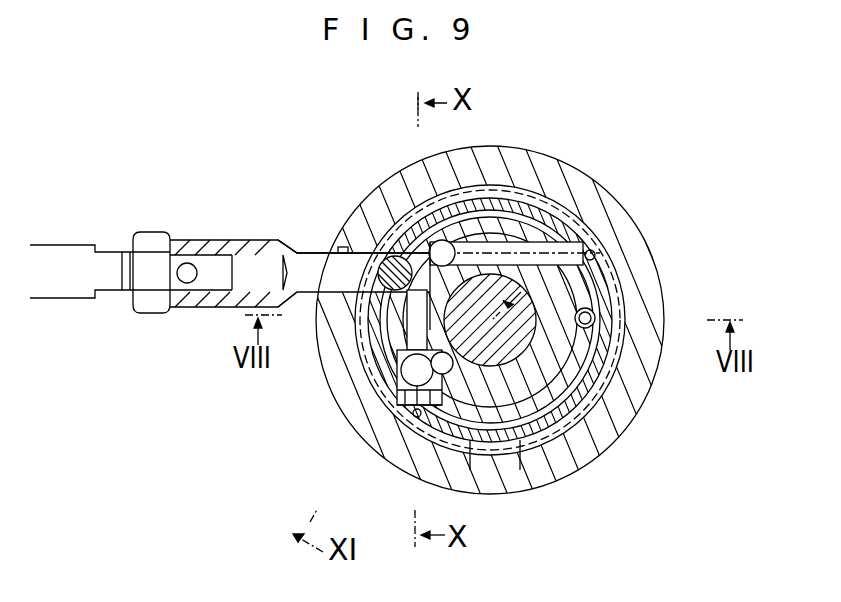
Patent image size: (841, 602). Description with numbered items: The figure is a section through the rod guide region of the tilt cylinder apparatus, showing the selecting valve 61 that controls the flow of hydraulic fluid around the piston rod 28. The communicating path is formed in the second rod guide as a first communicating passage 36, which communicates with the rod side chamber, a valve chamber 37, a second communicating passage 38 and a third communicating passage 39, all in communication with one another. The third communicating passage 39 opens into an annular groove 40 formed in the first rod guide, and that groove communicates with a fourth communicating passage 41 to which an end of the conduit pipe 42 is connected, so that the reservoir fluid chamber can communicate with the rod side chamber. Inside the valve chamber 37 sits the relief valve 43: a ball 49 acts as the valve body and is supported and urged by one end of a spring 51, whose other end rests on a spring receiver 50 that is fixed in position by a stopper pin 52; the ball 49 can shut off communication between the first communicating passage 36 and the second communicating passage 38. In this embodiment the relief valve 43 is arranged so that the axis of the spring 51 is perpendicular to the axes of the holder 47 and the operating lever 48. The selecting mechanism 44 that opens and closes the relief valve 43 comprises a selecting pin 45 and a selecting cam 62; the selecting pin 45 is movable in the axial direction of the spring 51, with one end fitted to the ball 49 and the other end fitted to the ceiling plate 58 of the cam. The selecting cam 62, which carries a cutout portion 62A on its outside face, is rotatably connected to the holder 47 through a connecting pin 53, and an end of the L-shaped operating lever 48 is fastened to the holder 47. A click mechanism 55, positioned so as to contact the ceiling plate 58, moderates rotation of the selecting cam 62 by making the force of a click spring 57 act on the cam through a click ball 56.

The piston rod 28 is at (600, 292).
The first communicating passage 36 is at (485, 462).
The valve chamber 37 is at (535, 470).
The second communicating passage 38 is at (628, 430).
The third communicating passage 39 is at (358, 383).
The annular groove 40 is at (590, 462).
The fourth communicating passage 41 is at (596, 318).
The conduit pipe 42 is at (630, 375).
The relief valve 43 is at (205, 418).
The selecting mechanism 44 is at (335, 153).
The selecting pin 45 is at (340, 250).
The holder 47 is at (193, 232).
The operating lever 48 is at (80, 245).
The ball 49 is at (395, 405).
The spring receiver 50 is at (425, 425).
The spring 51 is at (405, 420).
The stopper pin 52 is at (440, 425).
The connecting pin 53 is at (392, 256).
The click mechanism 55 is at (572, 191).
The click ball 56 is at (584, 242).
The click spring 57 is at (576, 250).
The ceiling plate 58 is at (600, 248).
The selecting valve 61 is at (400, 375).
The selecting cam 62 is at (400, 250).
The cutout portion 62A is at (410, 240).